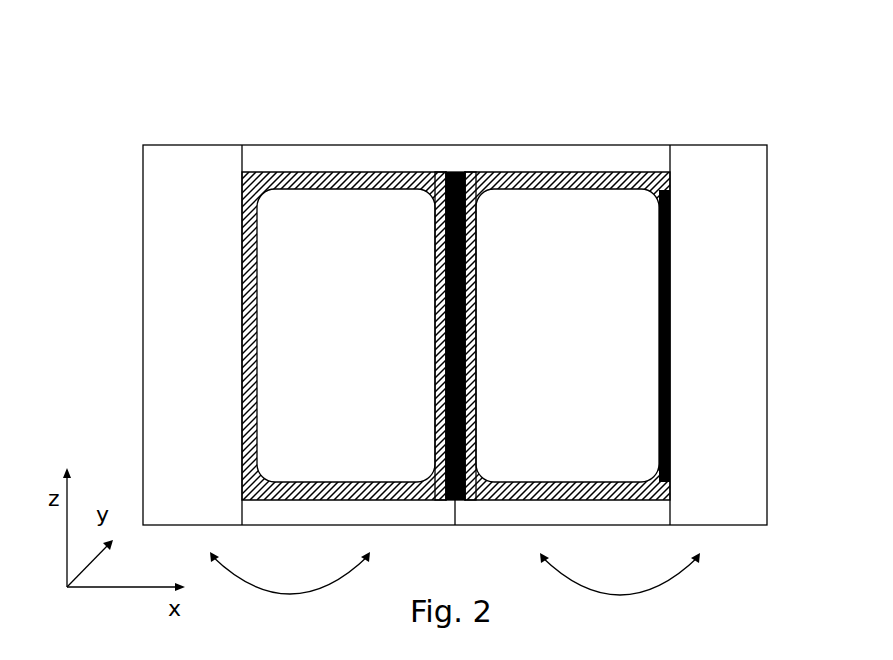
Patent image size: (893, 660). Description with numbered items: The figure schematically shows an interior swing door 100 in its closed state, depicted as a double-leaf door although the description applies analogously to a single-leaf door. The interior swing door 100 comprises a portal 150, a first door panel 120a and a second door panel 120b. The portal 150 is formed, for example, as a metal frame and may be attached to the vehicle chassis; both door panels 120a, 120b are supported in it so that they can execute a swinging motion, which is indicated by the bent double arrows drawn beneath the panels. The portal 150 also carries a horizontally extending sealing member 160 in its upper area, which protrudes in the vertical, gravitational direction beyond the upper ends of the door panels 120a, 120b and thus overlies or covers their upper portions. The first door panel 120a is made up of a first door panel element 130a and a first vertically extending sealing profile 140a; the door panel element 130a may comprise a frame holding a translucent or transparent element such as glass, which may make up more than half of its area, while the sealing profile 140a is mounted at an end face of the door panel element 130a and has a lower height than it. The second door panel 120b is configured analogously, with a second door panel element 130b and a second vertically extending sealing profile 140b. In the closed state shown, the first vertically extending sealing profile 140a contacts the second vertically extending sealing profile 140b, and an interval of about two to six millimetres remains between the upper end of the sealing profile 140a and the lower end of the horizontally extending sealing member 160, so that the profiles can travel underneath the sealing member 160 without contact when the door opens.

The interior swing door 100 is at (118, 60).
The first door panel 120a is at (250, 158).
The second door panel 120b is at (639, 159).
The first door panel element 130a is at (291, 178).
The second door panel element 130b is at (538, 172).
The first vertically extending sealing profile 140a is at (433, 172).
The second vertically extending sealing profile 140b is at (470, 172).
The portal 150 is at (172, 335).
The horizontally extending sealing member 160 is at (454, 154).